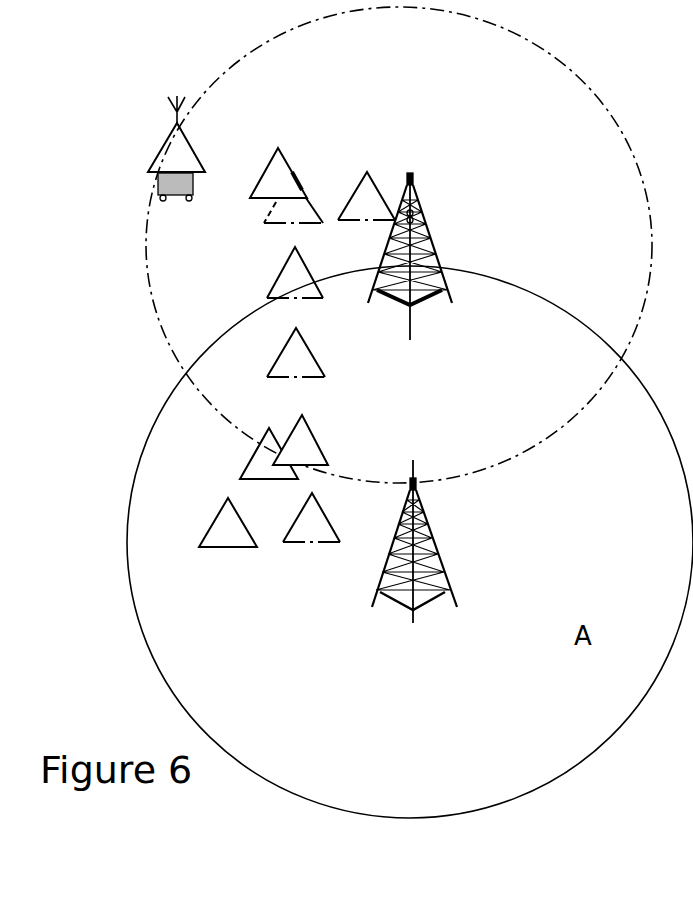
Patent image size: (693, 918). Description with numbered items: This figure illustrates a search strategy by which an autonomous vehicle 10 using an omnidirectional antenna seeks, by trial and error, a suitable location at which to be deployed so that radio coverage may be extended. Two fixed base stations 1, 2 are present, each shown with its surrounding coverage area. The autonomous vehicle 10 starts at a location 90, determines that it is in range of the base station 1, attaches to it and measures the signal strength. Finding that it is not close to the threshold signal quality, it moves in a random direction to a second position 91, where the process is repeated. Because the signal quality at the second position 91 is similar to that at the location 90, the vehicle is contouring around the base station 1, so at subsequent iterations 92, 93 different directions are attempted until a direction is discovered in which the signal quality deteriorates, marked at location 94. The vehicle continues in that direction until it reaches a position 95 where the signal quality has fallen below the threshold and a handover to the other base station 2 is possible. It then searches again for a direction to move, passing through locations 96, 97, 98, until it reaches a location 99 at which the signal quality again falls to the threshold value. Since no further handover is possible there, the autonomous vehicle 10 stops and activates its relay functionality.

The base station 1 is at (418, 533).
The base station 2 is at (411, 249).
The autonomous vehicle 10 is at (399, 245).
The location 90 is at (228, 542).
The second position 91 is at (255, 453).
The subsequent iteration location 92 is at (327, 517).
The subsequent iteration location 93 is at (311, 434).
The marker location 94 is at (308, 352).
The position 95 is at (308, 271).
The search location 96 is at (277, 209).
The search location 97 is at (370, 182).
The search location 98 is at (278, 161).
The location 99 is at (186, 148).